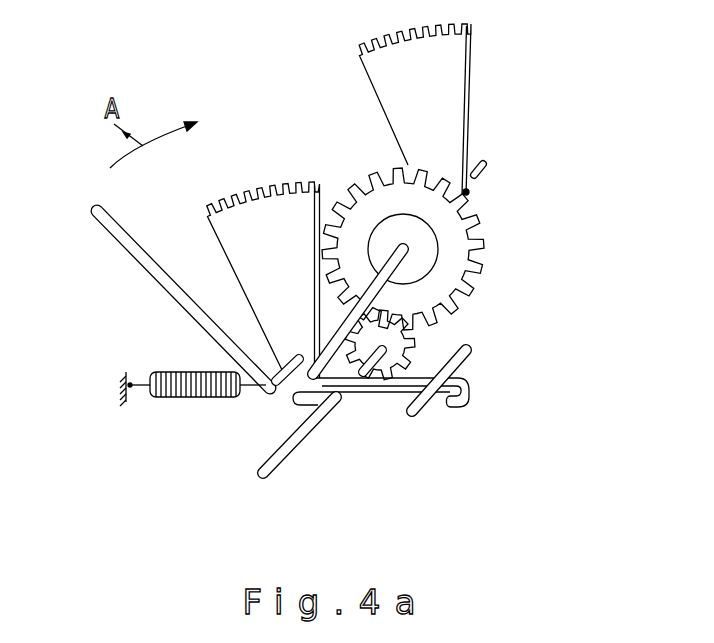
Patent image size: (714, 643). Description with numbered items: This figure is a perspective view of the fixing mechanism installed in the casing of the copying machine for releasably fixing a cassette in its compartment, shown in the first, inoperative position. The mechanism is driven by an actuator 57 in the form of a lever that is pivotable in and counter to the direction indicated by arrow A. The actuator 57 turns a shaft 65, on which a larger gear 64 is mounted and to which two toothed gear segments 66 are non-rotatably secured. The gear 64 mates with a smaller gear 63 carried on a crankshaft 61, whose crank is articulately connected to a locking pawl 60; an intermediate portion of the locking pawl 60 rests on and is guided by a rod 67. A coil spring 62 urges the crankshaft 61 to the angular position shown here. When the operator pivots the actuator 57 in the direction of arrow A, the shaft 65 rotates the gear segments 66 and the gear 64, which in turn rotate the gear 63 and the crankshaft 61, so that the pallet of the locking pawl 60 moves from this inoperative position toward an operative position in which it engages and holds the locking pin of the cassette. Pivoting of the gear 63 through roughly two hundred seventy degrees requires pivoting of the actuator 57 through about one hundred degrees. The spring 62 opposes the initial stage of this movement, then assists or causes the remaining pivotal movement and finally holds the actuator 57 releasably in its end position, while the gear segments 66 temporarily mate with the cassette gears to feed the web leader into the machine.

The actuator 57 is at (140, 268).
The locking pawl 60 is at (465, 383).
The crankshaft 61 is at (292, 440).
The coil spring 62 is at (215, 398).
The gear 63 is at (412, 340).
The gear 64 is at (455, 253).
The shaft 65 is at (478, 180).
The gear segments 66 is at (413, 91).
The rod 67 is at (423, 410).